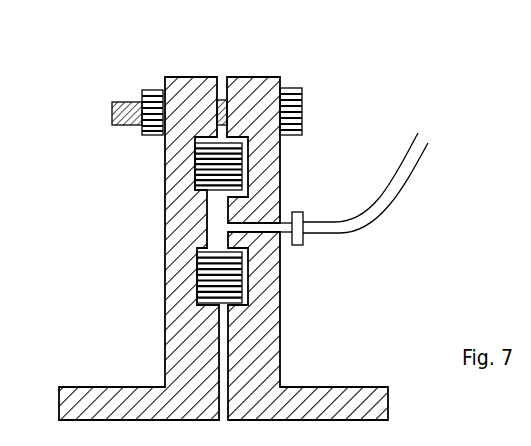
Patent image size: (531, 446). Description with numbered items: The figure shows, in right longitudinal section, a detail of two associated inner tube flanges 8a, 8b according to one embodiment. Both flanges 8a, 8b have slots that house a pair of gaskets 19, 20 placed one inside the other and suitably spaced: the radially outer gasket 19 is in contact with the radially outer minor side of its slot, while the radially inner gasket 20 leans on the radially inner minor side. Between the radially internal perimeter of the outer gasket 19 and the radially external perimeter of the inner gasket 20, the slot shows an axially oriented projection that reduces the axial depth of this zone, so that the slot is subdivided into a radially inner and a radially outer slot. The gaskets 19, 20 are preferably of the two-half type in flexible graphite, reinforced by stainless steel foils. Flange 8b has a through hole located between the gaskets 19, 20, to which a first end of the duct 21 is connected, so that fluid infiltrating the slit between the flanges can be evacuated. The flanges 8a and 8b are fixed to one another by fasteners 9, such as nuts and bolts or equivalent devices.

The flange 8a is at (175, 211).
The flange 8b is at (280, 177).
The fasteners 9 is at (110, 138).
The radially outer gasket 19 is at (232, 167).
The radially inner gasket 20 is at (208, 287).
The duct 21 is at (365, 209).